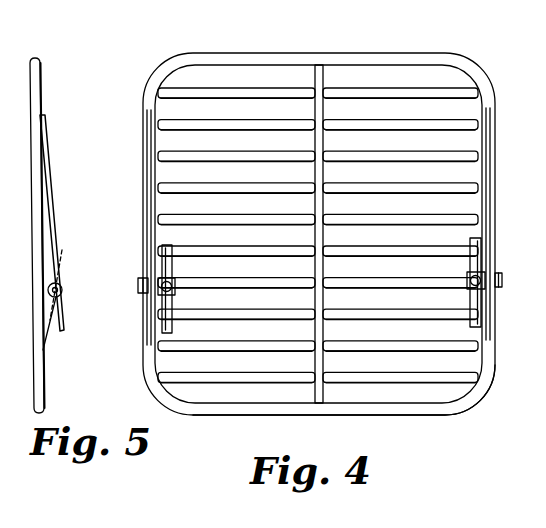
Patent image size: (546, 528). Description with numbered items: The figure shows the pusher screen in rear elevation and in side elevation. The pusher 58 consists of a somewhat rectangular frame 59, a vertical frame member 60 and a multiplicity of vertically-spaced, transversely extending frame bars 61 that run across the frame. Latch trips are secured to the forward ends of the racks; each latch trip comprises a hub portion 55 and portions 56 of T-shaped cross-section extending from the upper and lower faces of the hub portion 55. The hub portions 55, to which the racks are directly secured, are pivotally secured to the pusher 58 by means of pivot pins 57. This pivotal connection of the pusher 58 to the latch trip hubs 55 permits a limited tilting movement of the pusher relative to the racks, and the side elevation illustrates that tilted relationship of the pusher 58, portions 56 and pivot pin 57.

In FIG. 4, the hub portion 55 is at (173, 293).
In FIG. 4, the portion of T-shaped cross-section 56 is at (165, 262).
In FIG. 5, the portion of T-shaped cross-section 56 is at (60, 256).
In FIG. 4, the pivot pin 57 is at (143, 293).
In FIG. 5, the pivot pin 57 is at (62, 289).
In FIG. 4, the pusher 58 is at (411, 403).
In FIG. 4, the rectangular frame 59 is at (397, 58).
In FIG. 5, the rectangular frame 59 is at (38, 58).
In FIG. 4, the vertical frame member 60 is at (327, 98).
In FIG. 4, the frame bars 61 is at (255, 352).